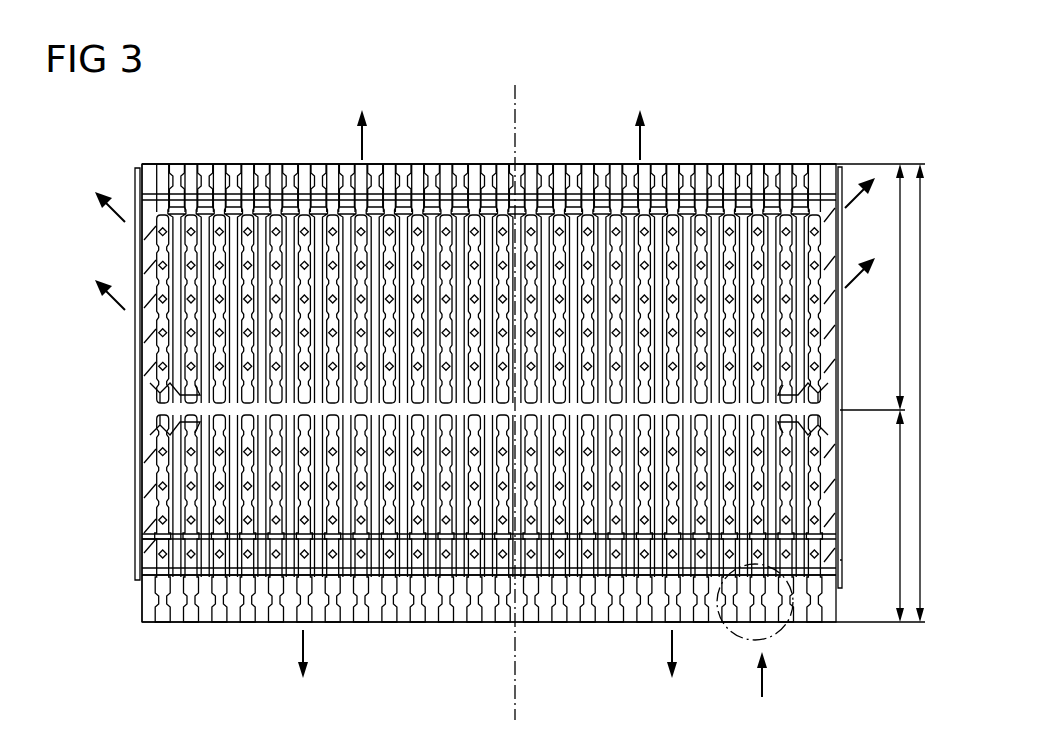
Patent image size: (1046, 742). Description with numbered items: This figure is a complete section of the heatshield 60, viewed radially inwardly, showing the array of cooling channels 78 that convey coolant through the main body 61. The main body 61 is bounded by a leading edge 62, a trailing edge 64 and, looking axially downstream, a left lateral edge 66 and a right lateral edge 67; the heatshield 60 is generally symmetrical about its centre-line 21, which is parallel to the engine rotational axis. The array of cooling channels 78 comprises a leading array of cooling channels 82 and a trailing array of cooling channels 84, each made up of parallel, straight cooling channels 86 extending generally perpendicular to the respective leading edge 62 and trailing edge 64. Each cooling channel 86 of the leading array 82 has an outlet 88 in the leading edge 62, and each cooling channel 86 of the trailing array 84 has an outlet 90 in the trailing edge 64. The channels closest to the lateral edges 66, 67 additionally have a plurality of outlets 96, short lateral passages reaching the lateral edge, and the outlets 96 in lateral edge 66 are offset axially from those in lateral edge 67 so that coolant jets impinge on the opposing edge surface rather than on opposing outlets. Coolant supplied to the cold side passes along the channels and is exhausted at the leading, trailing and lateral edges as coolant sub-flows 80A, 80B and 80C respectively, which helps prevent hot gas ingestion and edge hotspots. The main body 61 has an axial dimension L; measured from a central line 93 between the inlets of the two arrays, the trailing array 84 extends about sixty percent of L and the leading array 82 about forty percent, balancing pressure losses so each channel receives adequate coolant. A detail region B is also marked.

The centre-line 21 is at (517, 688).
The heatshield 60 is at (98, 306).
The main body 61 is at (128, 362).
The leading edge 62 is at (199, 628).
The trailing edge 64 is at (796, 162).
The left lateral edge 66 is at (136, 440).
The right lateral edge 67 is at (843, 490).
The array of cooling channels 78 is at (140, 504).
The coolant sub-flow 80A is at (305, 645).
The coolant sub-flow 80B is at (364, 140).
The coolant sub-flow 80C is at (126, 222).
The leading array of cooling channels 82 is at (170, 553).
The trailing array of cooling channels 84 is at (263, 250).
The cooling channel 86 is at (340, 190).
The outlet 88 is at (392, 625).
The outlet 90 is at (450, 160).
The central point or line 93 is at (862, 415).
The outlets 96 is at (158, 430).
The detail B is at (788, 626).
The dimension L is at (920, 375).